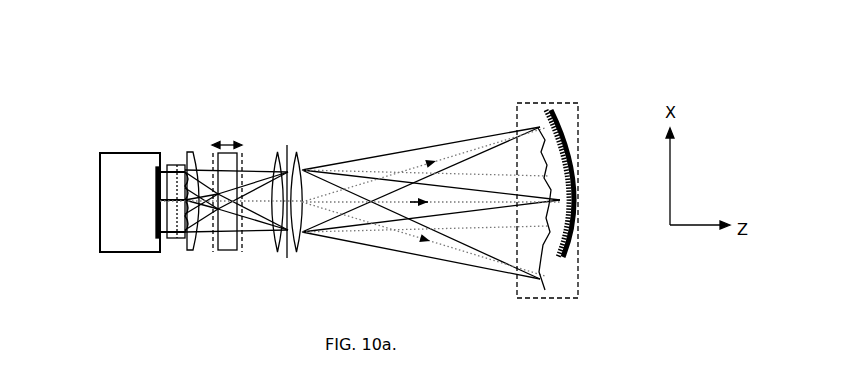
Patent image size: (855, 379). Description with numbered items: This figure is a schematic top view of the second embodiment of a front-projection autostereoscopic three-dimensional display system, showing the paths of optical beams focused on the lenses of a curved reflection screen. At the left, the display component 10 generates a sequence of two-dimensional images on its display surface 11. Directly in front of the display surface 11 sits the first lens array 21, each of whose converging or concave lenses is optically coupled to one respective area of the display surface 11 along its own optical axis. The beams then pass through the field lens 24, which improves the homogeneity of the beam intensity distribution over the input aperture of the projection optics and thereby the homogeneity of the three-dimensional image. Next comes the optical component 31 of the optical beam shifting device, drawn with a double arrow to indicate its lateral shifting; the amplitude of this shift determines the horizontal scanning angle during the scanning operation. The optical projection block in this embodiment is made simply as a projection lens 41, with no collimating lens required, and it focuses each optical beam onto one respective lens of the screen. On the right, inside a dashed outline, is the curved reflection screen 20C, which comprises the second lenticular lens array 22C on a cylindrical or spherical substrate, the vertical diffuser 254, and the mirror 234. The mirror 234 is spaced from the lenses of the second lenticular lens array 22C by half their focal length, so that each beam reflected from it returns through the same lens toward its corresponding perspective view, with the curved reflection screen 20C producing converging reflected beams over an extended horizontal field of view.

The display component 10 is at (100, 185).
The display surface 11 is at (158, 238).
The first lens array 21 is at (175, 165).
The field lens 24 is at (192, 152).
The optical component 31 is at (240, 153).
The projection lens 41 is at (305, 155).
The curved reflection screen 20C is at (563, 300).
The second lenticular lens array 22C is at (538, 130).
The mirror 234 is at (558, 124).
The vertical diffuser 254 is at (553, 108).